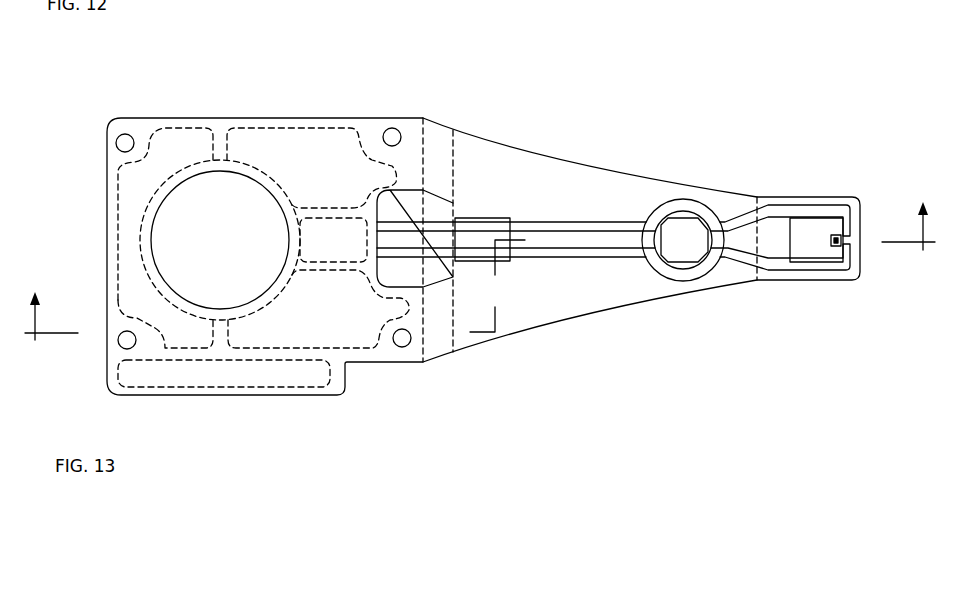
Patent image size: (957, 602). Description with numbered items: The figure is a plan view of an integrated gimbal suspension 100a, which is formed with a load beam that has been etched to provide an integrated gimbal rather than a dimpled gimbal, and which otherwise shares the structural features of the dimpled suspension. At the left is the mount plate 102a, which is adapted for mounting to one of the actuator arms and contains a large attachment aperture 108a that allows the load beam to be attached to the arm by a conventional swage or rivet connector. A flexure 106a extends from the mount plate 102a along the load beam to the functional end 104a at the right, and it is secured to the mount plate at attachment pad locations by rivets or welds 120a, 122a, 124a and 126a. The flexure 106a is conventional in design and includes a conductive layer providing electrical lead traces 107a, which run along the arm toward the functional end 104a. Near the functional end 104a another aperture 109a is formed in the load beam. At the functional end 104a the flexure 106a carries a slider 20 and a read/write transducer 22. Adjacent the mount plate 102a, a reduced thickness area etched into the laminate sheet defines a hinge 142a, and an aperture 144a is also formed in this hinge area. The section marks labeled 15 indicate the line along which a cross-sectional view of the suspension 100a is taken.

The suspension 100a is at (77, 131).
The mount plate 102a is at (263, 96).
The functional end 104a is at (723, 156).
The flexure 106a is at (556, 172).
The electrical lead traces 107a is at (563, 223).
The attachment aperture 108a is at (175, 188).
The aperture 109a is at (687, 252).
The rivet or weld 120a is at (125, 138).
The rivet or weld 122a is at (391, 127).
The rivet or weld 124a is at (403, 348).
The rivet or weld 126a is at (122, 345).
The hinge 142a is at (440, 142).
The aperture 144a is at (441, 217).
The slider 20 is at (810, 230).
The read/write transducer 22 is at (837, 247).
The section line 15- 15 is at (482, 282).